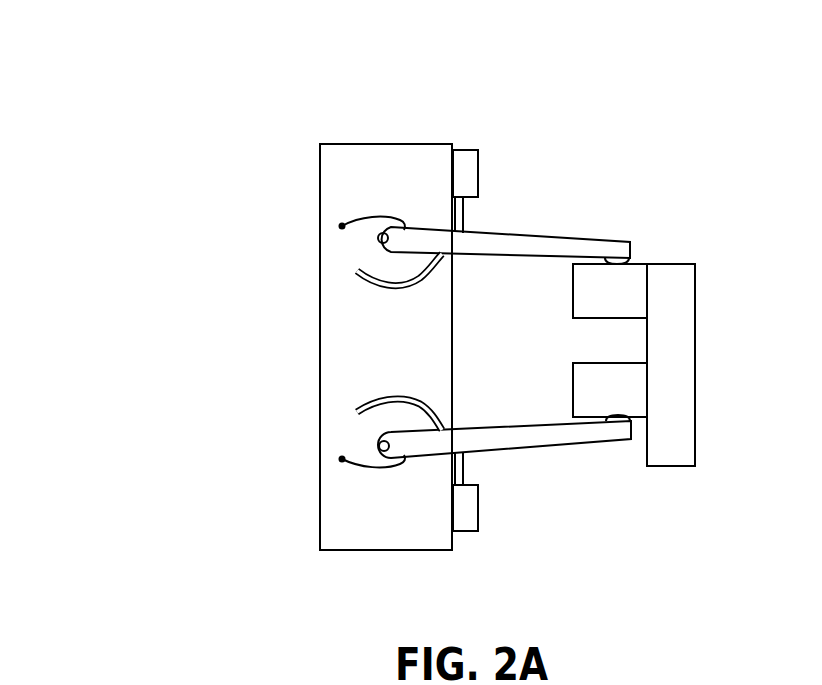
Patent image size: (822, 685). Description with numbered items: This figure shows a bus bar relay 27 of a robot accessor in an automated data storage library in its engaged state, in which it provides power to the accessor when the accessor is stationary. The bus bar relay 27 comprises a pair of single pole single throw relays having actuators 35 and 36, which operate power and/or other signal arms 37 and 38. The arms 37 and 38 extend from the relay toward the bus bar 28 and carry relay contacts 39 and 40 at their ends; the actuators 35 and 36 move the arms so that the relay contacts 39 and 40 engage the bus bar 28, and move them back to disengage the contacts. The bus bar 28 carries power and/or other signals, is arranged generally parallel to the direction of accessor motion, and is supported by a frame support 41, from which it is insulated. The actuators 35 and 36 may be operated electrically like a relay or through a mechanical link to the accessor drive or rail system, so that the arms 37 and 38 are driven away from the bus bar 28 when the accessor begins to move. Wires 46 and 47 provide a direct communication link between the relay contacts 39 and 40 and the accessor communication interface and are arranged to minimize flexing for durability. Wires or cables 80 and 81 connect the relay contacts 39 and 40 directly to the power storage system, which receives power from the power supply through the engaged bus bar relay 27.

The bus bar relay 27 is at (172, 136).
The bus bar 28 is at (573, 280).
The actuator 35 is at (478, 156).
The actuator 36 is at (478, 517).
The power and/or other signal arm 37 is at (500, 236).
The power and/or other signal arm 38 is at (502, 452).
The relay contact 39 is at (633, 258).
The relay contact 40 is at (600, 418).
The frame support 41 is at (695, 344).
The wire 46 is at (390, 213).
The wire 47 is at (389, 472).
The wire or cable 80 is at (388, 291).
The wire or cable 81 is at (389, 393).